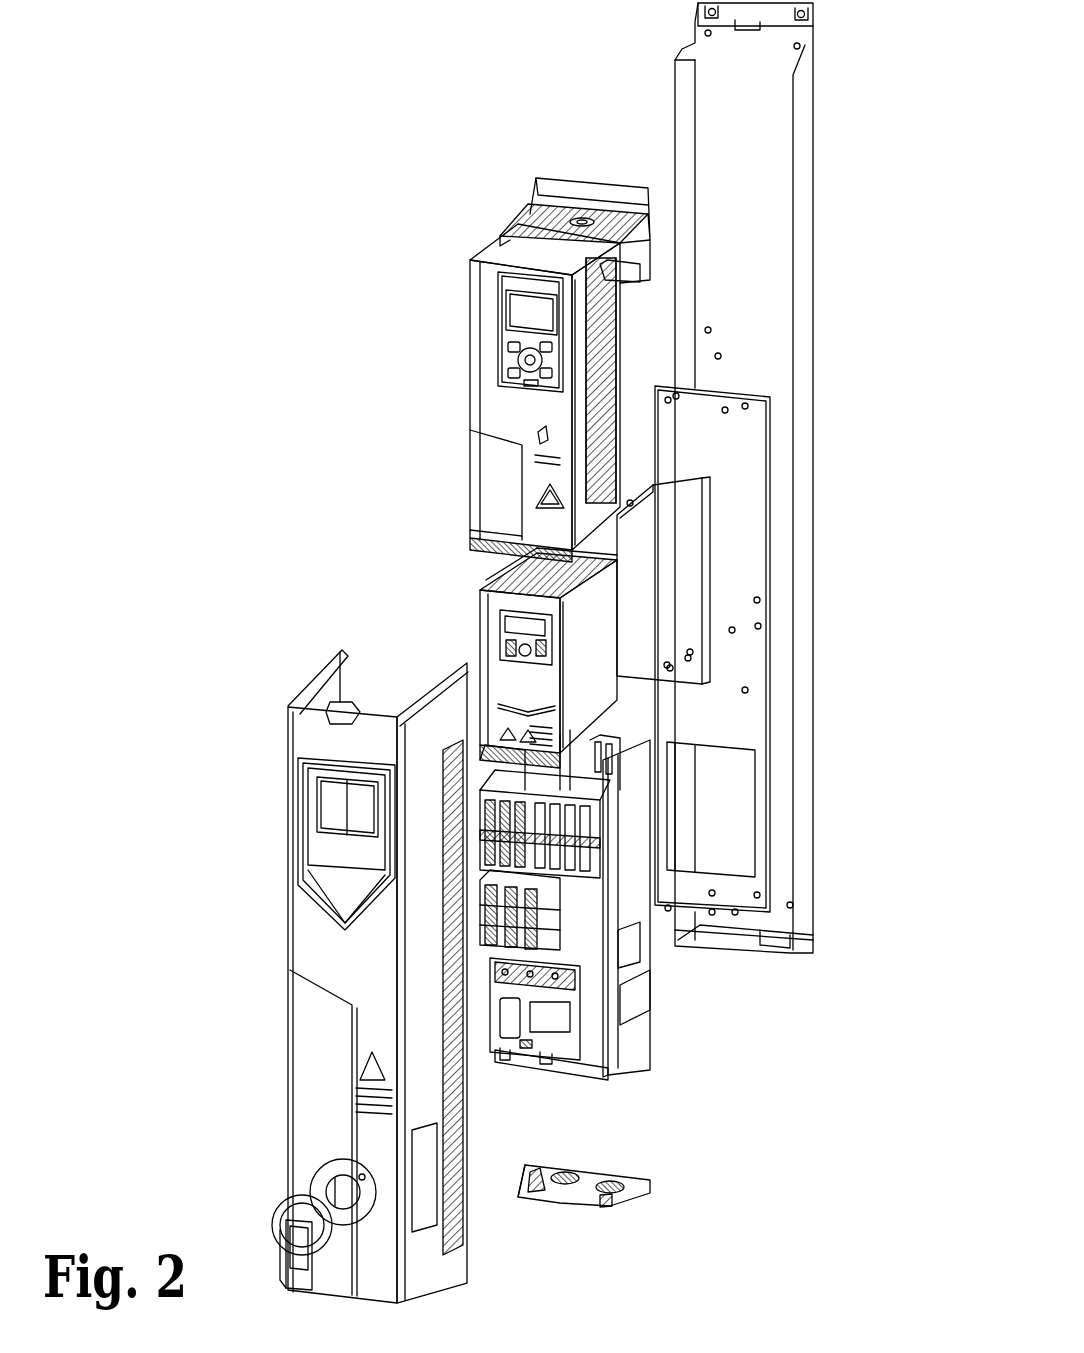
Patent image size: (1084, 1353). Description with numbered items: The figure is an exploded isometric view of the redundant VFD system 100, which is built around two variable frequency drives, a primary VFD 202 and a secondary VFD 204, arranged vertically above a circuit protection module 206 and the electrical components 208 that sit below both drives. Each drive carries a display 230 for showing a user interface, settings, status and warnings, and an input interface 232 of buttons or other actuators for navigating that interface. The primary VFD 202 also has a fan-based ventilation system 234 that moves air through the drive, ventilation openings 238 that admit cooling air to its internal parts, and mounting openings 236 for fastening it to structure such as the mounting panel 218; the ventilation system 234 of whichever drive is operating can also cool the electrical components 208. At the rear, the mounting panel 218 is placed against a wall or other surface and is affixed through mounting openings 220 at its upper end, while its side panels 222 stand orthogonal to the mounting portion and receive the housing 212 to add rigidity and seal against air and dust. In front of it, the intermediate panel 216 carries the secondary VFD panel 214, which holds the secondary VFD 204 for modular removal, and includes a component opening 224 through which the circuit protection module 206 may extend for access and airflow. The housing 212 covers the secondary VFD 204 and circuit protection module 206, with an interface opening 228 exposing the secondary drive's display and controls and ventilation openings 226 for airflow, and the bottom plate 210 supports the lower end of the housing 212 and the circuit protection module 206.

The redundant VFD system 100 is at (208, 192).
The primary VFD 202 is at (492, 216).
The secondary VFD 204 is at (470, 578).
The circuit protection module 206 is at (668, 1026).
The electrical components 208 is at (604, 822).
The bottom plate 210 is at (628, 1202).
The housing 212 is at (283, 943).
The secondary VFD panel 214 is at (692, 546).
The intermediate panel 216 is at (742, 468).
The mounting panel 218 is at (676, 47).
The mounting openings 220 is at (805, 14).
The side panels 222 is at (808, 140).
The component opening 224 is at (766, 855).
The ventilation openings 226 is at (466, 1232).
The interface opening 228 is at (320, 806).
The display 230 is at (512, 308).
The input interface 232 is at (492, 358).
The ventilation system 234 is at (522, 200).
The mounting openings 236 is at (640, 186).
The ventilation openings 238 is at (608, 270).